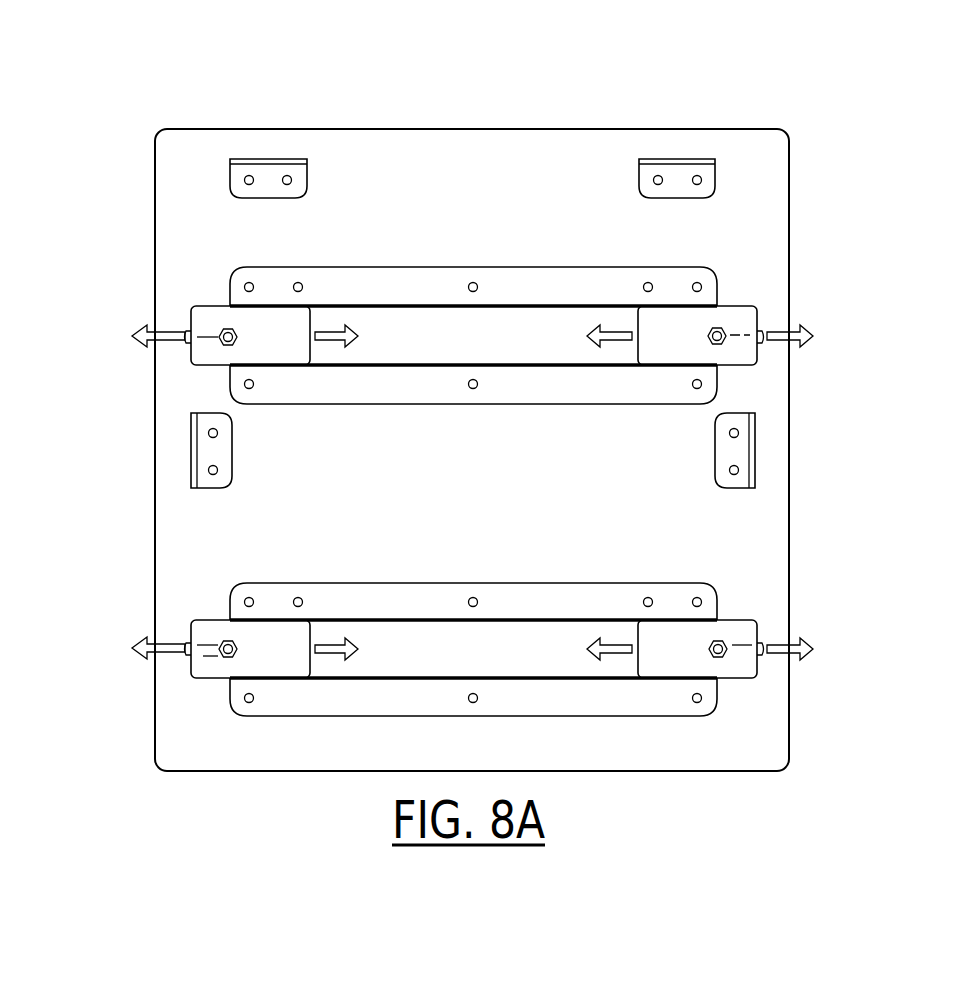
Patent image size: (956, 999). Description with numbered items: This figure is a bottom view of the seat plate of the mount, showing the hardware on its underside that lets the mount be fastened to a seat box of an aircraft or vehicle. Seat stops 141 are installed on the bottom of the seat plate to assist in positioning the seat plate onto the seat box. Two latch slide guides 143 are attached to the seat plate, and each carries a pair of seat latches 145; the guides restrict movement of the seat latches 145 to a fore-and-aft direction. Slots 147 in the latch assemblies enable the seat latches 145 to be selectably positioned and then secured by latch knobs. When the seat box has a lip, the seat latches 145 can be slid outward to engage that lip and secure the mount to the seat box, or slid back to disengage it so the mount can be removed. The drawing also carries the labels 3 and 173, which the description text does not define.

The base plate 3 is at (412, 113).
The seat stops 141 is at (269, 173).
The latch slide guides 143 is at (231, 254).
The seat latches 145 is at (207, 307).
The slots 147 is at (181, 329).
The lower hinge plate 173 is at (293, 718).